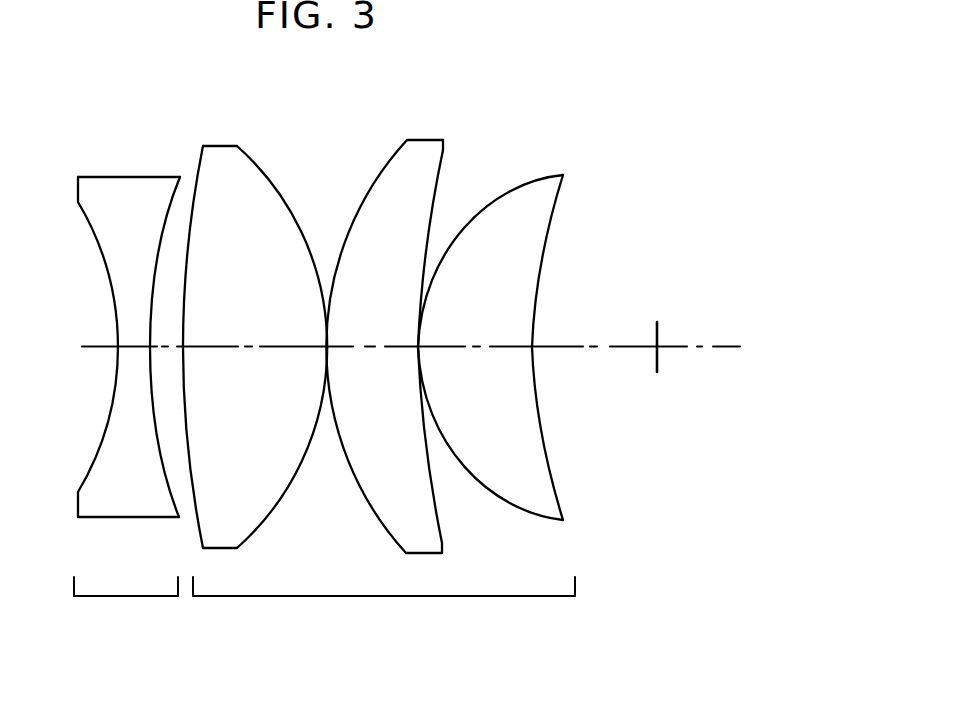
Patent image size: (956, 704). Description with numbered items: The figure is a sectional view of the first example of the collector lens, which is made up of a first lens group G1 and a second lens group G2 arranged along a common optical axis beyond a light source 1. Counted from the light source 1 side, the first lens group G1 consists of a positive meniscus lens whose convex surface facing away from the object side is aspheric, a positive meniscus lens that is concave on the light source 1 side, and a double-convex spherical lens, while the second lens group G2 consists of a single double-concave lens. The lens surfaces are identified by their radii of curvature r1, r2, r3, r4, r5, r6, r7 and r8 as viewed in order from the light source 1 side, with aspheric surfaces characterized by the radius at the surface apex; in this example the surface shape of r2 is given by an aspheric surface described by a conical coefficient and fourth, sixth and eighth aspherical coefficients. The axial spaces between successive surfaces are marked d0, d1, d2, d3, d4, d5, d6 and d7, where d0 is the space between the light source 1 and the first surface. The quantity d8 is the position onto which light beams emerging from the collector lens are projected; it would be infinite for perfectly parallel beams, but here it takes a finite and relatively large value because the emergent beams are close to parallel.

The light source 1 is at (657, 326).
The first lens group G1 is at (384, 608).
The second lens group G2 is at (126, 608).
The radius of curvature of first lens surface r1 is at (556, 211).
The radius of curvature of second lens surface r2 is at (513, 192).
The radius of curvature of third lens surface r3 is at (440, 176).
The radius of curvature of fourth lens surface r4 is at (381, 174).
The radius of curvature of fifth lens surface r5 is at (267, 177).
The radius of curvature of sixth lens surface r6 is at (193, 192).
The radius of curvature of seventh lens surface r7 is at (174, 198).
The radius of curvature of eighth lens surface r8 is at (88, 219).
The space between light source and first surface d0 is at (592, 346).
The space between lens surfaces d1 is at (478, 346).
The space between lens surfaces d2 is at (419, 345).
The space between lens surfaces d3 is at (372, 346).
The space between lens surfaces d4 is at (327, 346).
The space between lens surfaces d5 is at (250, 346).
The space between lens surfaces d6 is at (165, 346).
The space between lens surfaces d7 is at (132, 346).
The projection position of emergent light beams d8 is at (102, 346).